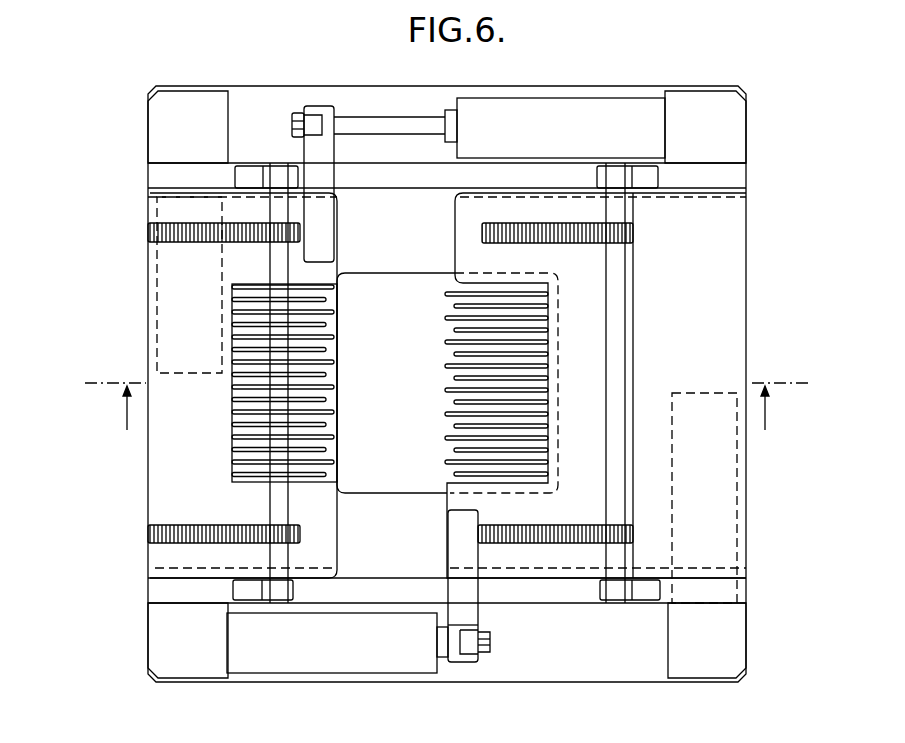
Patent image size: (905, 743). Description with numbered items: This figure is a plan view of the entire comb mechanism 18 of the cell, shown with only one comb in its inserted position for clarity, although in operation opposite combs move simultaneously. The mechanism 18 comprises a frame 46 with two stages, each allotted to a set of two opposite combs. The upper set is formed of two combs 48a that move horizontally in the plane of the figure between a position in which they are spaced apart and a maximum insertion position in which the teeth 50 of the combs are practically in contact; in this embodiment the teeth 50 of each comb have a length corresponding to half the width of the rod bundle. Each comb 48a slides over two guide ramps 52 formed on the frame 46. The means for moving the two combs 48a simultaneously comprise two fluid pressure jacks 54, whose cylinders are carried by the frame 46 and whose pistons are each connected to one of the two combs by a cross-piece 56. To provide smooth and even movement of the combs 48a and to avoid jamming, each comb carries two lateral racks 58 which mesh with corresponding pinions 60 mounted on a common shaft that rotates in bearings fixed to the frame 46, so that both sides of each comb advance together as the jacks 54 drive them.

The comb mechanism 18 is at (146, 316).
The frame 46 is at (725, 326).
The comb 48a is at (238, 258).
The teeth 50 is at (320, 331).
The guide ramp 52 is at (165, 192).
The fluid pressure jack 54 is at (624, 118).
The cross-piece 56 is at (318, 178).
The lateral rack 58 is at (551, 232).
The pinion 60 is at (300, 233).